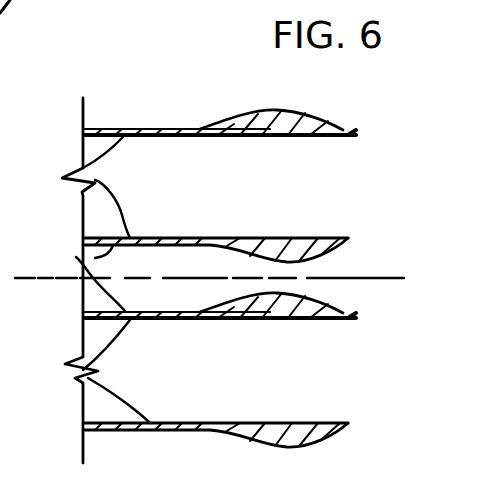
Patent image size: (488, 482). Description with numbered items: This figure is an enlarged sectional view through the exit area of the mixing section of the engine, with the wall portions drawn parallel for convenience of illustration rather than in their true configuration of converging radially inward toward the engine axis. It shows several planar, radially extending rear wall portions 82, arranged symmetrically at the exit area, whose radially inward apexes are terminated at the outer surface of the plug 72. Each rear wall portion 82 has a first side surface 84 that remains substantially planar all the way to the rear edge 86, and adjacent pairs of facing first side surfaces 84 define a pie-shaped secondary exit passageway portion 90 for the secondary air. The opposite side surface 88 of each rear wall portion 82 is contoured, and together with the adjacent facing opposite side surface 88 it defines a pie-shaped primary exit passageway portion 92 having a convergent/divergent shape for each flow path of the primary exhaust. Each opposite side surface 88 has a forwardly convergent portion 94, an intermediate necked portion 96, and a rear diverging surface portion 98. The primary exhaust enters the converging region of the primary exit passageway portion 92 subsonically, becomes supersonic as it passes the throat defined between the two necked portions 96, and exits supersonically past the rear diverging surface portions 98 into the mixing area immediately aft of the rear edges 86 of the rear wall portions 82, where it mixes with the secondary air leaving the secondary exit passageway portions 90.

The plug 72 is at (18, 63).
The rear wall portion 82 is at (83, 168).
The first side surface 84 is at (262, 237).
The rear edge 86 is at (348, 135).
The opposite side surface 88 is at (213, 128).
The secondary exit passageway portion 90 is at (304, 188).
The primary exit passageway portion 92 is at (324, 267).
The forwardly convergent portion 94 is at (268, 296).
The intermediate necked portion 96 is at (288, 110).
The rear diverging surface portion 98 is at (323, 124).